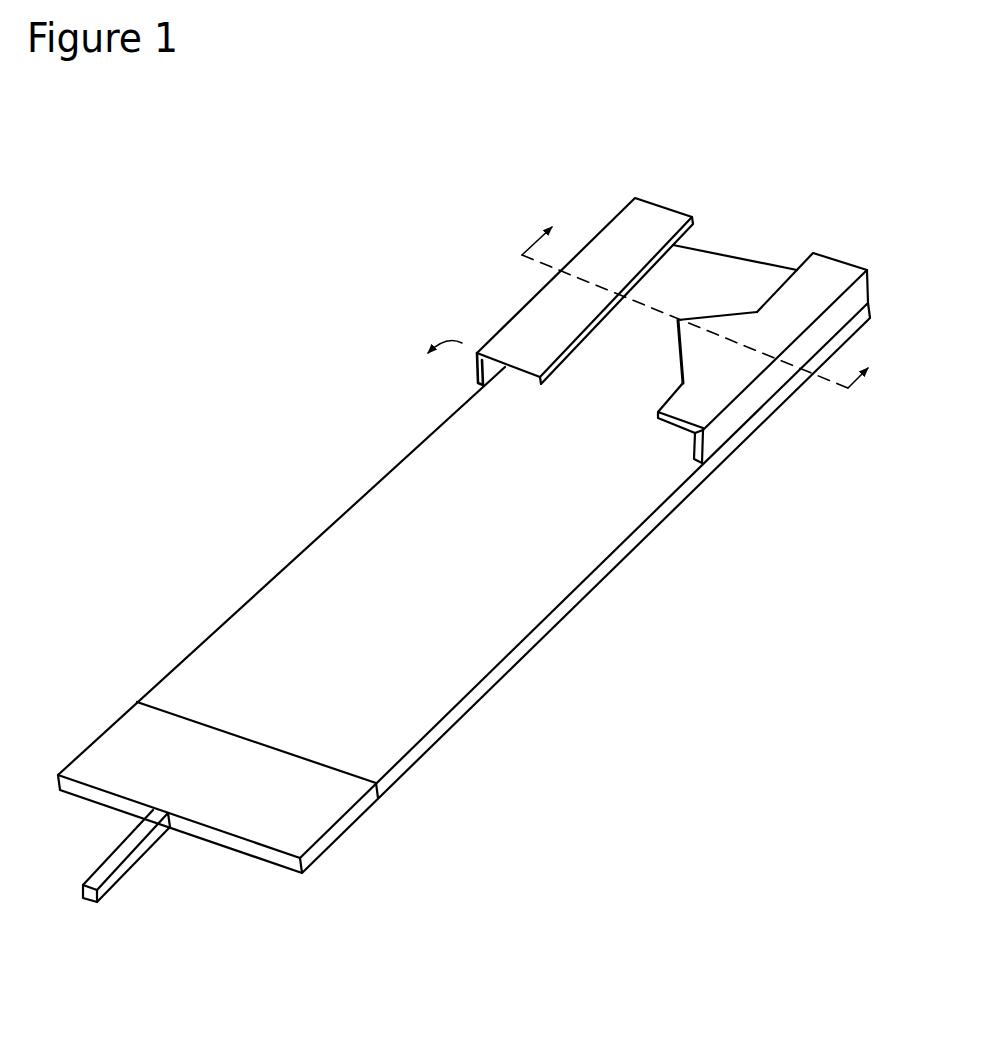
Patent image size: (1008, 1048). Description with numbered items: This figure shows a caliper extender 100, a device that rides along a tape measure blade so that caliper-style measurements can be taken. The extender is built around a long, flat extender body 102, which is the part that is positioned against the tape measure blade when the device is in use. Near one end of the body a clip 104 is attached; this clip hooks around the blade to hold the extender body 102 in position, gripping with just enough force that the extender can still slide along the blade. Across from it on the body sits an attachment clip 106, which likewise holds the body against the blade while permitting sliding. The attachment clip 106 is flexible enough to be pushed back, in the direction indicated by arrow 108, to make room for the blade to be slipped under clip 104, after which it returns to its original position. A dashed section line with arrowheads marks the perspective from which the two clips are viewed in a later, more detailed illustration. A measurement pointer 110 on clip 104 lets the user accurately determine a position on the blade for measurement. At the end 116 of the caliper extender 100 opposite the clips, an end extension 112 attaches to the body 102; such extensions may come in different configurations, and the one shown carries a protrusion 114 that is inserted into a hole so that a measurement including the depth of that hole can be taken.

The caliper extender 100 is at (471, 120).
The extender body 102 is at (325, 681).
The clip 104 is at (693, 402).
The attachment clip 106 is at (520, 338).
The arrow 108 is at (422, 364).
The measurement pointer 110 is at (677, 322).
The end extension 112 is at (133, 743).
The protrusion 114 is at (110, 882).
The end 116 is at (177, 712).